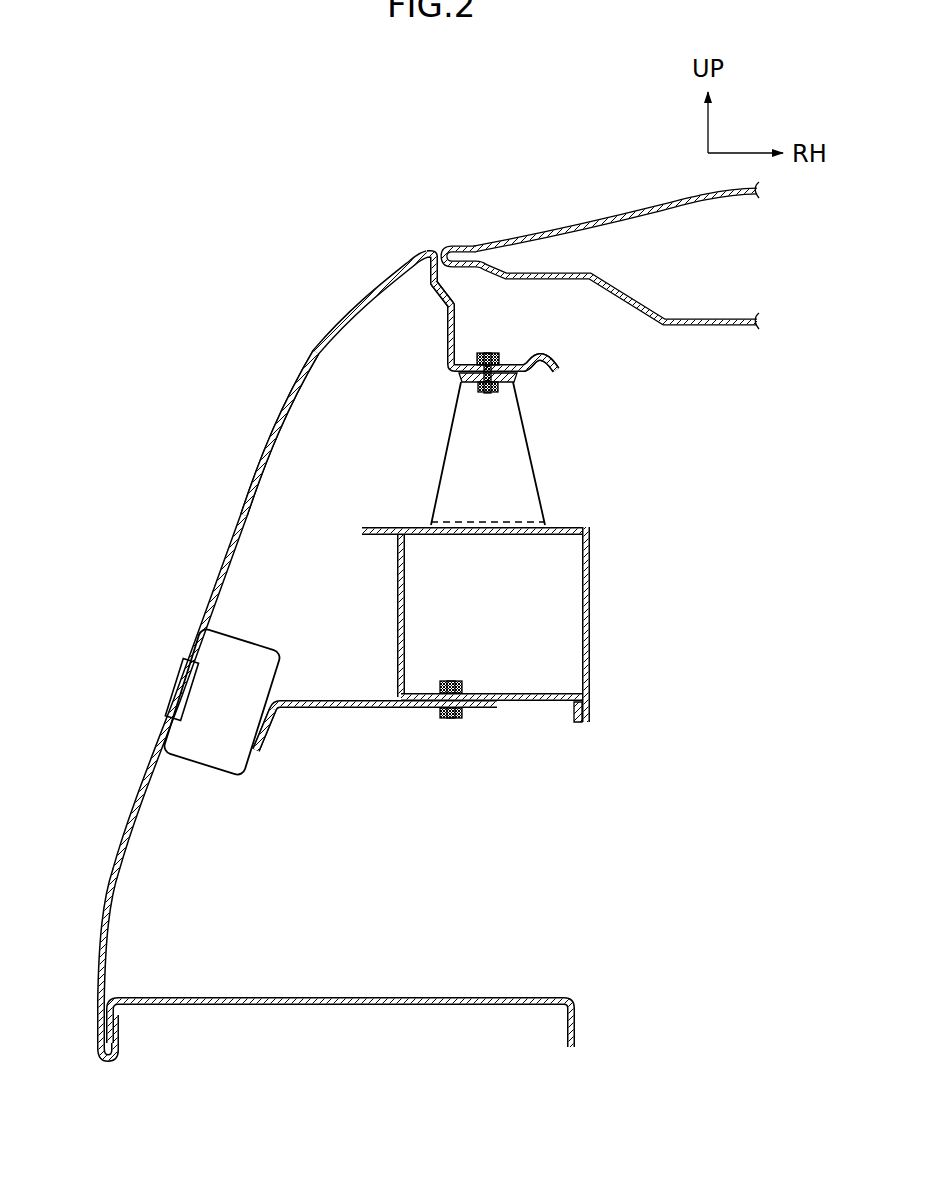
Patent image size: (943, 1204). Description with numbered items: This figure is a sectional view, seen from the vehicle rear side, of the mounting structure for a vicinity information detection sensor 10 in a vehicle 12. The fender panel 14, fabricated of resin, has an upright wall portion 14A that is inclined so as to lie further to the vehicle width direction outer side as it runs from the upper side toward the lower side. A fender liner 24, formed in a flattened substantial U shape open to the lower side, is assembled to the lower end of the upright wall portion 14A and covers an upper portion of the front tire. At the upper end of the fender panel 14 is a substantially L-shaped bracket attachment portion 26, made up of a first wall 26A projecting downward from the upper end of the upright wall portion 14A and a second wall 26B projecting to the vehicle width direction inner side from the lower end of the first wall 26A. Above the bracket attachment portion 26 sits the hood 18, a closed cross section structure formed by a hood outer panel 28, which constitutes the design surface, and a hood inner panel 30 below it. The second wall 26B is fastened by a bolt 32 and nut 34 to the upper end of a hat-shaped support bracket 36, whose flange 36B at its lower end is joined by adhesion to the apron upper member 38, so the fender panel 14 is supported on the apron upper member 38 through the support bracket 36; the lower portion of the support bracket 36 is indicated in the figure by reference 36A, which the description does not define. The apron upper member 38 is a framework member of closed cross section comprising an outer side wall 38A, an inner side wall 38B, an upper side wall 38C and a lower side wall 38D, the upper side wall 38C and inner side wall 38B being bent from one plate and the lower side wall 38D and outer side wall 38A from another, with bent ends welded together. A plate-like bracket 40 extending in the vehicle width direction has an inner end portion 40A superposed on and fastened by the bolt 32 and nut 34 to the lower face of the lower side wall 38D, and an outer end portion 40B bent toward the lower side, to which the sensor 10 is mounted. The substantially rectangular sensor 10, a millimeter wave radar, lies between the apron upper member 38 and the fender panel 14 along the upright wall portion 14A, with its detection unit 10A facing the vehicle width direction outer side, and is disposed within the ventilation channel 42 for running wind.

The vicinity information detection sensor 10 is at (238, 630).
The detection unit 10A is at (178, 688).
The vehicle 12 is at (311, 184).
The fender panel 14 is at (229, 484).
The upright wall portion 14A is at (212, 560).
The hood 18 is at (571, 207).
The fender liner 24 is at (370, 997).
The bracket attachment portion 26 is at (445, 347).
The first wall 26A is at (431, 292).
The second wall 26B is at (520, 365).
The hood outer panel 28 is at (503, 246).
The hood inner panel 30 is at (716, 328).
The bolt 32 is at (487, 350).
The nut 34 is at (503, 389).
The support bracket 36 is at (540, 486).
The upper flange of bracket 36A is at (460, 387).
The flange 36B is at (458, 514).
The apron upper member 38 is at (525, 644).
The outer side wall 38A is at (398, 612).
The inner side wall 38B is at (592, 595).
The upper side wall 38C is at (505, 538).
The lower side wall 38D is at (528, 704).
The bracket 40 is at (346, 710).
The end portion 40A is at (473, 709).
The end portion 40B is at (258, 754).
The ventilation channel 42 is at (323, 560).